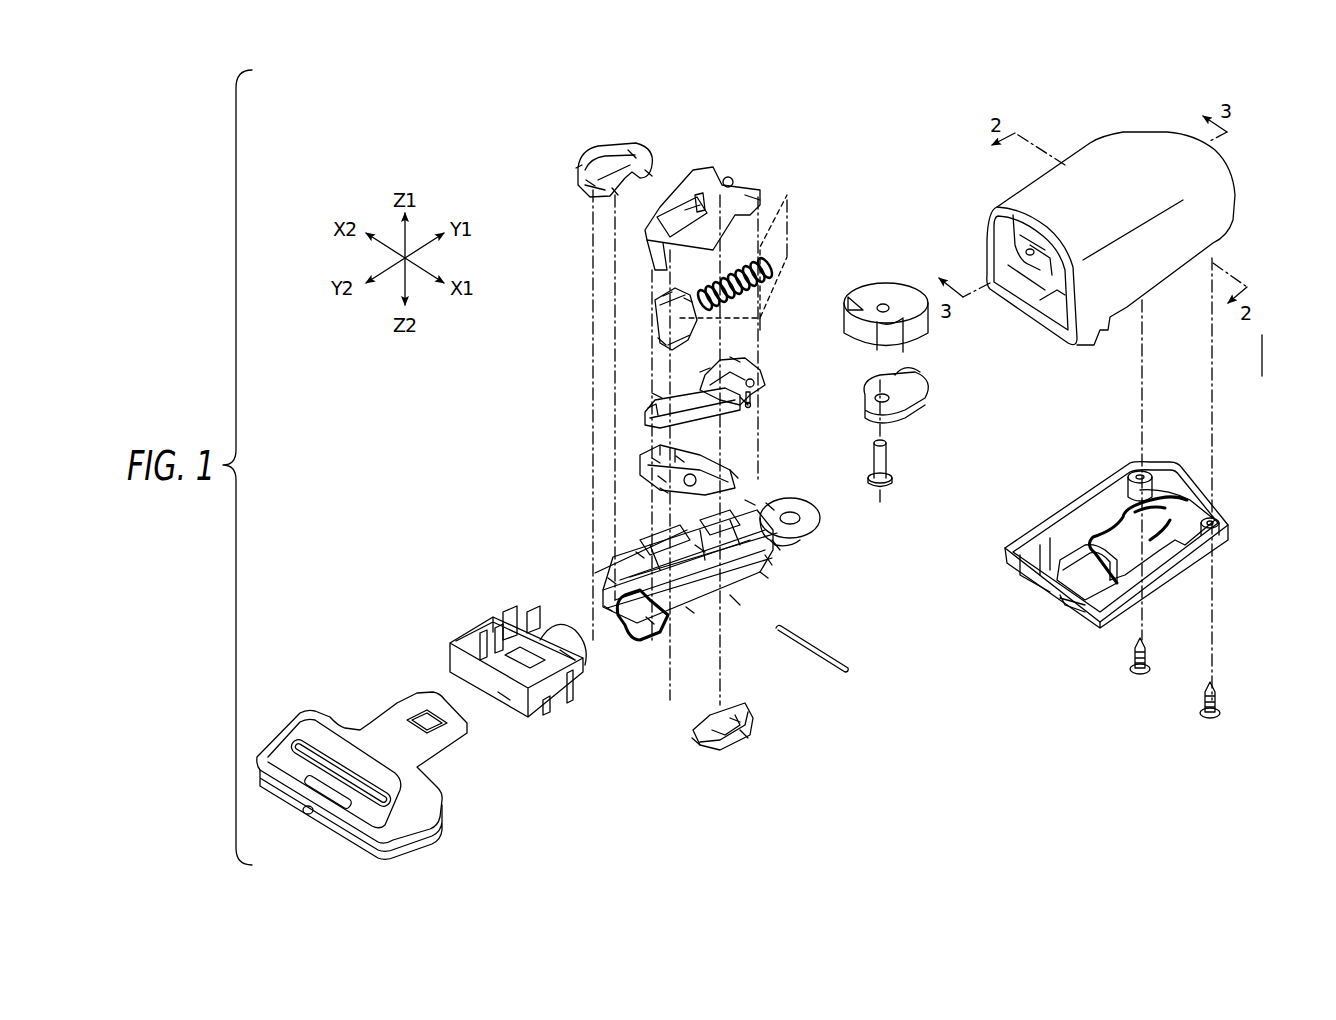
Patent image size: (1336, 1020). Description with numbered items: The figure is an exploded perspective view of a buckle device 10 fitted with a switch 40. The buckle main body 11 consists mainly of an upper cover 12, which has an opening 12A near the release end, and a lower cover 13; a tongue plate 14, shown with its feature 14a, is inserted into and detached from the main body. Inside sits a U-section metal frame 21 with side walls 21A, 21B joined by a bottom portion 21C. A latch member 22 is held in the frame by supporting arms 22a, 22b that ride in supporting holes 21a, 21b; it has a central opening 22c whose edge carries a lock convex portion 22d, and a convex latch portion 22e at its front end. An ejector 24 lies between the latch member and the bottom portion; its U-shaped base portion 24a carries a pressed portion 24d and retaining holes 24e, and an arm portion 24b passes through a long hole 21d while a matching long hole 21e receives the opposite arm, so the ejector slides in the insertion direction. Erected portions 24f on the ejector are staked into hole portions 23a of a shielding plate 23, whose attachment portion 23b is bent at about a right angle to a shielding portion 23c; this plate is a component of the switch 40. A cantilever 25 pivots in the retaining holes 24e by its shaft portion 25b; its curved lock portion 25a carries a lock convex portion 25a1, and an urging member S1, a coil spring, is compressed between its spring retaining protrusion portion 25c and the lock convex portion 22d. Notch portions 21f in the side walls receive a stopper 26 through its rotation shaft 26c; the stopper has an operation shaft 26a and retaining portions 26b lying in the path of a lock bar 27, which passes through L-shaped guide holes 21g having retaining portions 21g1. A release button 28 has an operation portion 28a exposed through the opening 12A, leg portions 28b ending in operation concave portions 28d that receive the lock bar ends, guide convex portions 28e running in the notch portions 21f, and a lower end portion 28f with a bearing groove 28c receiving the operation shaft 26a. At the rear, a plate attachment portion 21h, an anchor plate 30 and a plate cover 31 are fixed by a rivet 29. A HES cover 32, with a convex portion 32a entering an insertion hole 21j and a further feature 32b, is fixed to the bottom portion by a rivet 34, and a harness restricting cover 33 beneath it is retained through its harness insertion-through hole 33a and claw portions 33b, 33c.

The buckle device 10 is at (522, 170).
The buckle main body 11 is at (1258, 330).
The upper cover 12 is at (1173, 238).
The opening 12A is at (1047, 290).
The lower cover 13 is at (1162, 455).
The tongue plate 14 is at (372, 735).
The engagement hole 14a is at (422, 725).
The frame 21 is at (810, 513).
The side wall 21A is at (750, 500).
The side wall 21B is at (765, 575).
The bottom portion 21C is at (642, 640).
The supporting hole 21a is at (770, 560).
The supporting hole 21b is at (770, 505).
The long hole 21d is at (735, 600).
The long hole 21e is at (700, 548).
The notch portion 21f is at (612, 580).
The guide hole 21g is at (640, 555).
The retaining portion 21g1 is at (608, 608).
The plate attachment portion 21h is at (815, 520).
The insertion hole 21j is at (778, 545).
The latch member 22 is at (755, 170).
The supporting arm 22a is at (760, 195).
The supporting arm 22b is at (728, 178).
The opening 22c is at (690, 213).
The lock convex portion 22d is at (700, 200).
The latch portion 22e is at (660, 255).
The shielding plate 23 is at (645, 418).
The hole portion 23a is at (650, 410).
The attachment portion 23b is at (655, 395).
The shielding portion 23c is at (745, 400).
The ejector 24 is at (640, 460).
The base portion 24a is at (660, 478).
The arm portion 24b is at (740, 465).
The pressed portion 24d is at (660, 490).
The retaining hole 24e is at (695, 447).
The erected portion 24f is at (655, 460).
The cantilever 25 is at (650, 320).
The lock portion 25a is at (665, 300).
The lock convex portion 25a1 is at (695, 262).
The shaft portion 25b is at (660, 340).
The spring retaining protrusion portion 25c is at (778, 317).
The stopper 26 is at (600, 145).
The operation shaft 26a is at (590, 183).
The retaining portion 26b is at (630, 155).
The rotation shaft 26c is at (580, 165).
The lock bar 27 is at (820, 655).
The release button 28 is at (495, 607).
The operation portion 28a is at (505, 700).
The leg portion 28b is at (478, 636).
The bearing groove 28c is at (572, 700).
The operation concave portion 28d is at (515, 615).
The guide convex portion 28e is at (487, 632).
The lower end portion 28f is at (530, 610).
The rivet 29 is at (888, 462).
The anchor plate 30 is at (920, 395).
The plate cover 31 is at (897, 290).
The HES cover 32 is at (745, 365).
The convex portion 32a is at (735, 355).
The switch lever hole 32b is at (760, 385).
The harness restricting cover 33 is at (750, 718).
The harness insertion-through hole 33a is at (735, 720).
The claw portion 33b is at (695, 742).
The claw portion 33c is at (745, 735).
The rivet 34 is at (755, 398).
The switch 40 is at (700, 370).
The urging member S1 is at (768, 273).